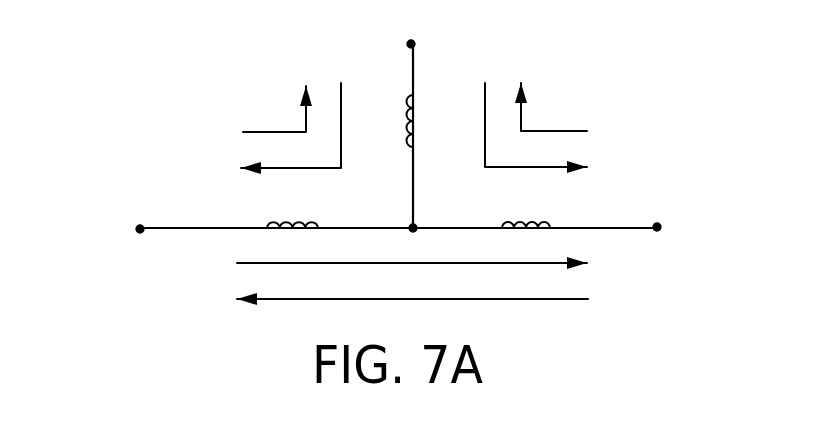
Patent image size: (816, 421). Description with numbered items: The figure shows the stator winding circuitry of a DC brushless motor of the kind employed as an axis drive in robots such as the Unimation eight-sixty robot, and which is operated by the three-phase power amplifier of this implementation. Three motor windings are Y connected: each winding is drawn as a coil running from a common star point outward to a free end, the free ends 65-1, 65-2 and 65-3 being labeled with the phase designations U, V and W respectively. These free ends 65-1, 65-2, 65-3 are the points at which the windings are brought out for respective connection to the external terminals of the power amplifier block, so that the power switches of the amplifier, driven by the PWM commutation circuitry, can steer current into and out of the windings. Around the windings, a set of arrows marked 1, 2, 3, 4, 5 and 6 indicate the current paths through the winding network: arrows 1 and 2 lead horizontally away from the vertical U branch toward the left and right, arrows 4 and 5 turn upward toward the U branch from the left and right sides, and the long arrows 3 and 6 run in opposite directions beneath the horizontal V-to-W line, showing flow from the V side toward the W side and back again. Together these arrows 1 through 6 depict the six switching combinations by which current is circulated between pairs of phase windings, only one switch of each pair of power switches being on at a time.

The free end of Y connected motor winding 65-1 is at (408, 43).
The free end of Y connected motor winding 65-2 is at (139, 231).
The free end of Y connected motor winding 65-3 is at (656, 230).
The current path 1 is at (291, 125).
The current path 2 is at (536, 125).
The current path 3 is at (412, 251).
The current path 4 is at (274, 109).
The current path 5 is at (554, 107).
The current path 6 is at (412, 288).